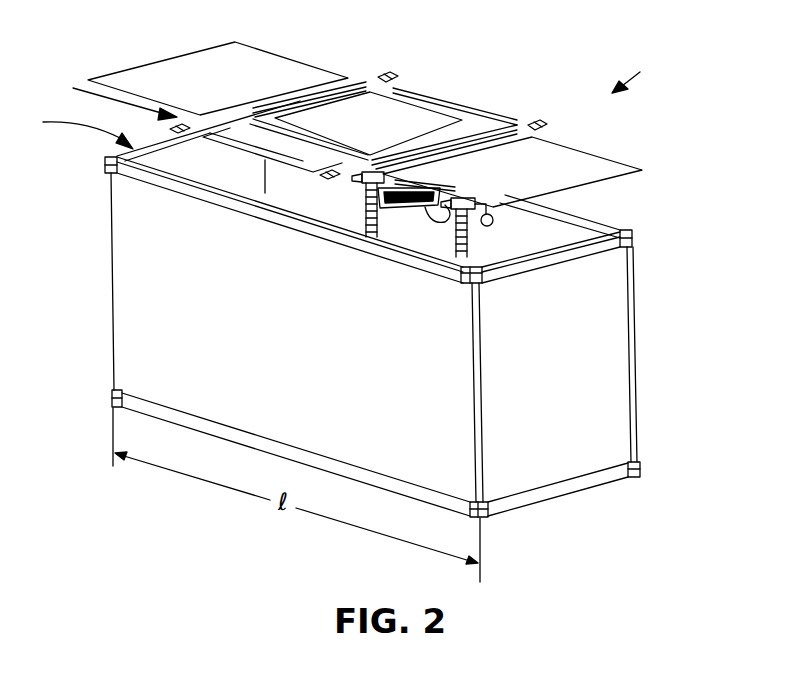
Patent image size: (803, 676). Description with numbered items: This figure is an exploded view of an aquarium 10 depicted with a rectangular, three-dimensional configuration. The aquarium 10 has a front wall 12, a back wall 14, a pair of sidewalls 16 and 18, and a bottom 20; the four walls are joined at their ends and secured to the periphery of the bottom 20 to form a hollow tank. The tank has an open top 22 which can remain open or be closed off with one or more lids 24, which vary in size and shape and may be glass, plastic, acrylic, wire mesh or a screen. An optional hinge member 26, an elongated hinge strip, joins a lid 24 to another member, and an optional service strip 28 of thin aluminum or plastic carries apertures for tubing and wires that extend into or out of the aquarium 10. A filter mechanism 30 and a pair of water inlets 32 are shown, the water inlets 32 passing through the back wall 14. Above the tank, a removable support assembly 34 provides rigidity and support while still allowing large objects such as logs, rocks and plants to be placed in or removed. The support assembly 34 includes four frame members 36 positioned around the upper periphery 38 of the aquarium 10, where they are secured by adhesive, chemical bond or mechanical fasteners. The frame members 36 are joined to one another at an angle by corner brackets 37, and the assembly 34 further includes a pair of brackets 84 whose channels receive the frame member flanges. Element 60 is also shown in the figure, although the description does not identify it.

The aquarium 10 is at (638, 74).
The front wall 12 is at (308, 347).
The back wall 14 is at (535, 242).
The sidewall 16 is at (249, 183).
The sidewall 18 is at (563, 367).
The bottom 20 is at (430, 503).
The open top 22 is at (172, 163).
The lid 24 is at (221, 87).
The hinge member 26 is at (313, 140).
The service strip 28 is at (446, 100).
The filter mechanism 30 is at (407, 207).
The water inlet 32 is at (372, 217).
The removable support assembly 34 is at (114, 99).
The frame member 36 is at (127, 173).
The corner bracket 37 is at (143, 162).
The upper periphery 38 is at (78, 130).
The side frame rail 60 is at (347, 83).
The bracket 84 is at (394, 73).